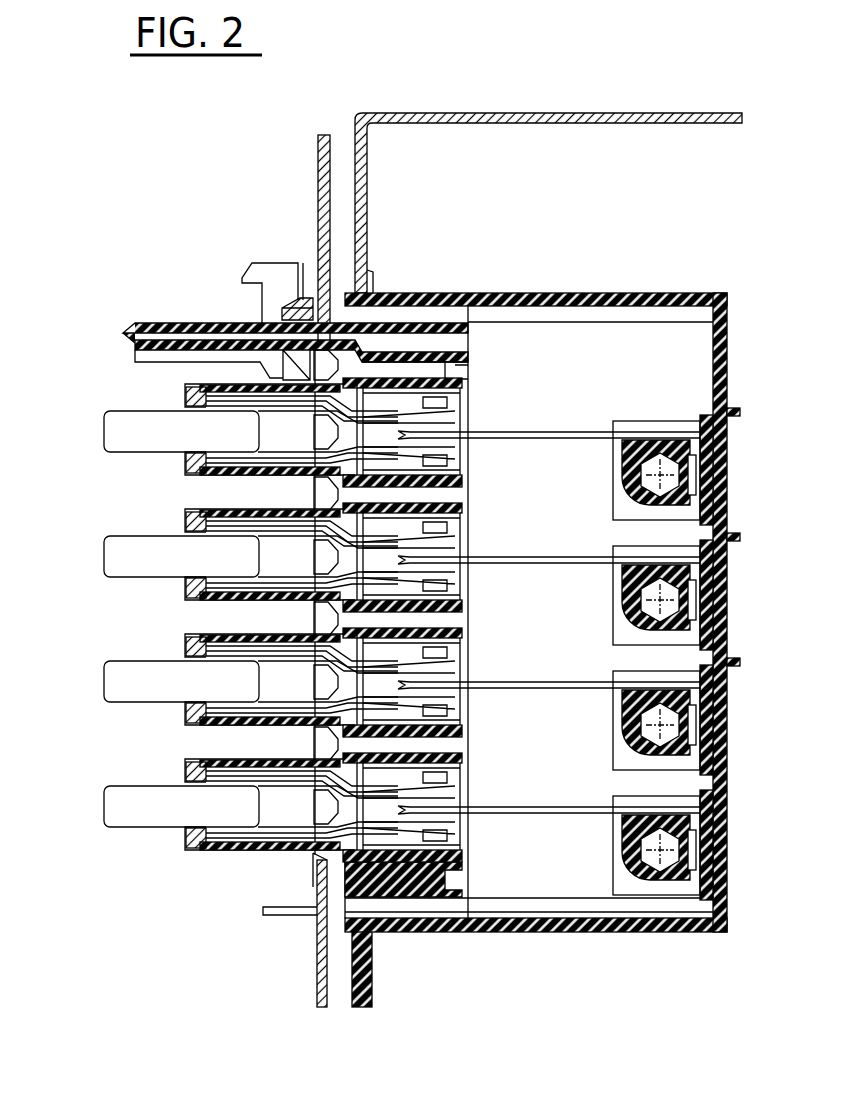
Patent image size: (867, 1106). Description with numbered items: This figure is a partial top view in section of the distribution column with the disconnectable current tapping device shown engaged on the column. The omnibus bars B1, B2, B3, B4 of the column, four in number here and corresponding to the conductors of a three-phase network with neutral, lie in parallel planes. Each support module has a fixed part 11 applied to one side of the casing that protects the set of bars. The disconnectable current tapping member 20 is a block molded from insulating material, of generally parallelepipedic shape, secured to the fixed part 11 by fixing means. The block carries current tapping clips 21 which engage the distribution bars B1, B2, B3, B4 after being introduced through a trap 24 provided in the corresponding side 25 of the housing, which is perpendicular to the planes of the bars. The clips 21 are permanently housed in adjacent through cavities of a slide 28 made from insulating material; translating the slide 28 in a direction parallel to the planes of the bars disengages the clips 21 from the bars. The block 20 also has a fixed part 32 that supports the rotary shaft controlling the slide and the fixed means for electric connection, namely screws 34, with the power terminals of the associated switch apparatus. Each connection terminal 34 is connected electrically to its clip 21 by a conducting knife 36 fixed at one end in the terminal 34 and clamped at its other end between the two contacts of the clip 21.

The fixed part 11 is at (580, 113).
The disconnectable current tapping member 20 is at (608, 293).
The current tapping clips 21 is at (192, 472).
The trap 24 is at (287, 915).
The side of the housing 25 is at (318, 188).
The slide 28 is at (468, 362).
The fixed part of the block 32 is at (727, 380).
The screws 34 is at (642, 480).
The conducting knife 36 is at (563, 410).
The omnibus bar B1 is at (105, 805).
The omnibus bar B2 is at (105, 680).
The omnibus bar B3 is at (105, 555).
The omnibus bar B4 is at (105, 430).